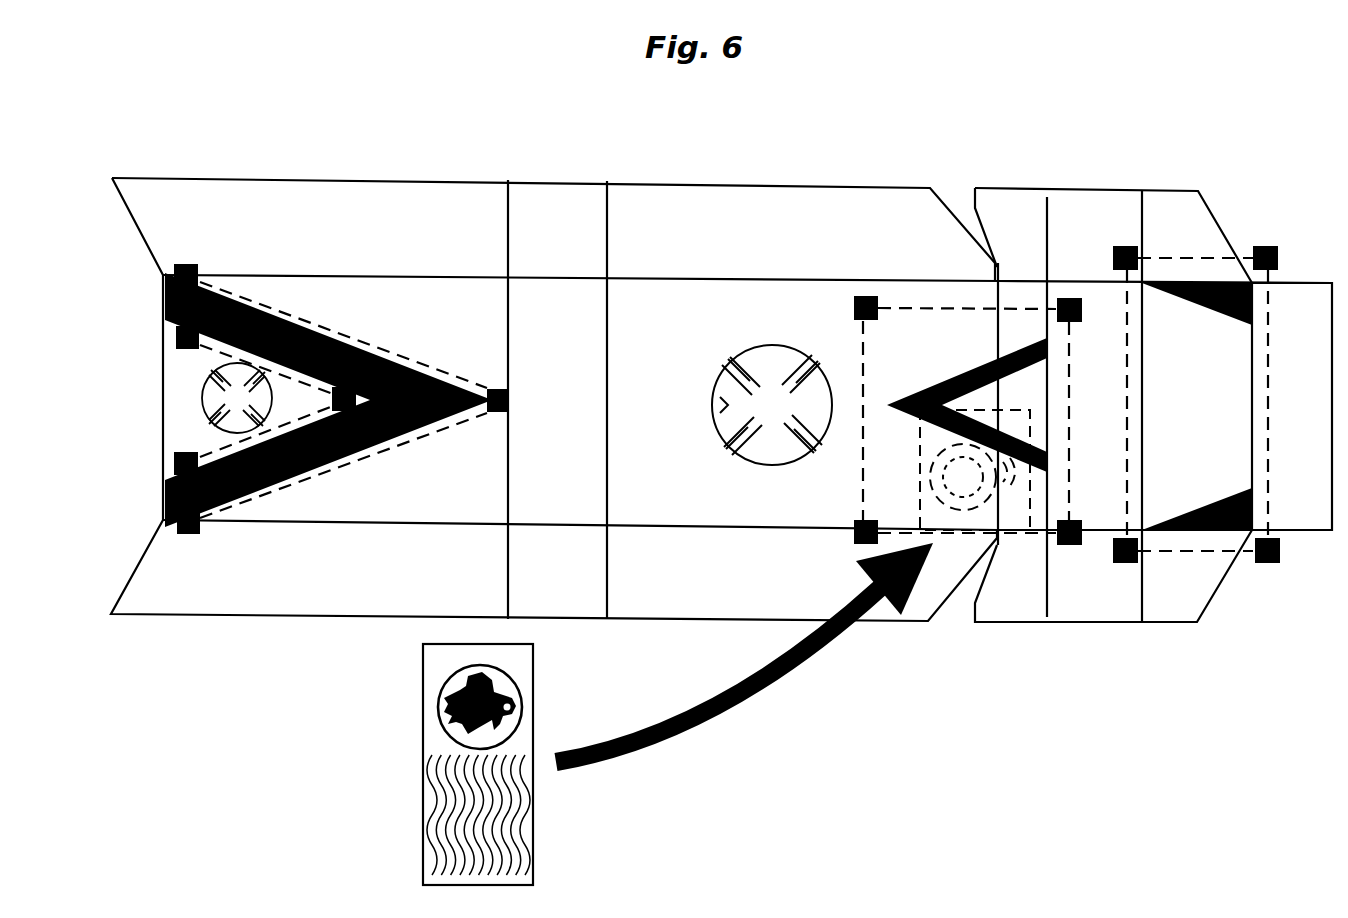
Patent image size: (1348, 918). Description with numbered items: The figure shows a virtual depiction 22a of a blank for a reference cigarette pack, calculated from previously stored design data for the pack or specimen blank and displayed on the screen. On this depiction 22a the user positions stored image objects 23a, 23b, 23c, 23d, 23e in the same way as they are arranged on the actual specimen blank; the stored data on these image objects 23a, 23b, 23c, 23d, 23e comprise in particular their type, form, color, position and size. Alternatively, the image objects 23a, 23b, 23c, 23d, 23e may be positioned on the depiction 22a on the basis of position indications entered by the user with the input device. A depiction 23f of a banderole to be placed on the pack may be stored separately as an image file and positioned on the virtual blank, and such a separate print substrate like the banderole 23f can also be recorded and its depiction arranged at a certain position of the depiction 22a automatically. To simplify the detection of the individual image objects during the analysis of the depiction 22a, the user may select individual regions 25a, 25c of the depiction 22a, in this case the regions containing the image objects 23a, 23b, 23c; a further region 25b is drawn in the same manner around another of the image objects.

The depiction of the blank 22a is at (858, 222).
The image object 23a is at (254, 307).
The image object 23b is at (1008, 362).
The image object 23c is at (1198, 283).
The image object 23d is at (774, 360).
The image object 23e is at (210, 398).
The depiction of a banderole 23f is at (972, 512).
The selected region of the depiction 25a is at (360, 340).
The stitching outline of patch area 25b is at (888, 307).
The selected region of the depiction 25c is at (1267, 408).